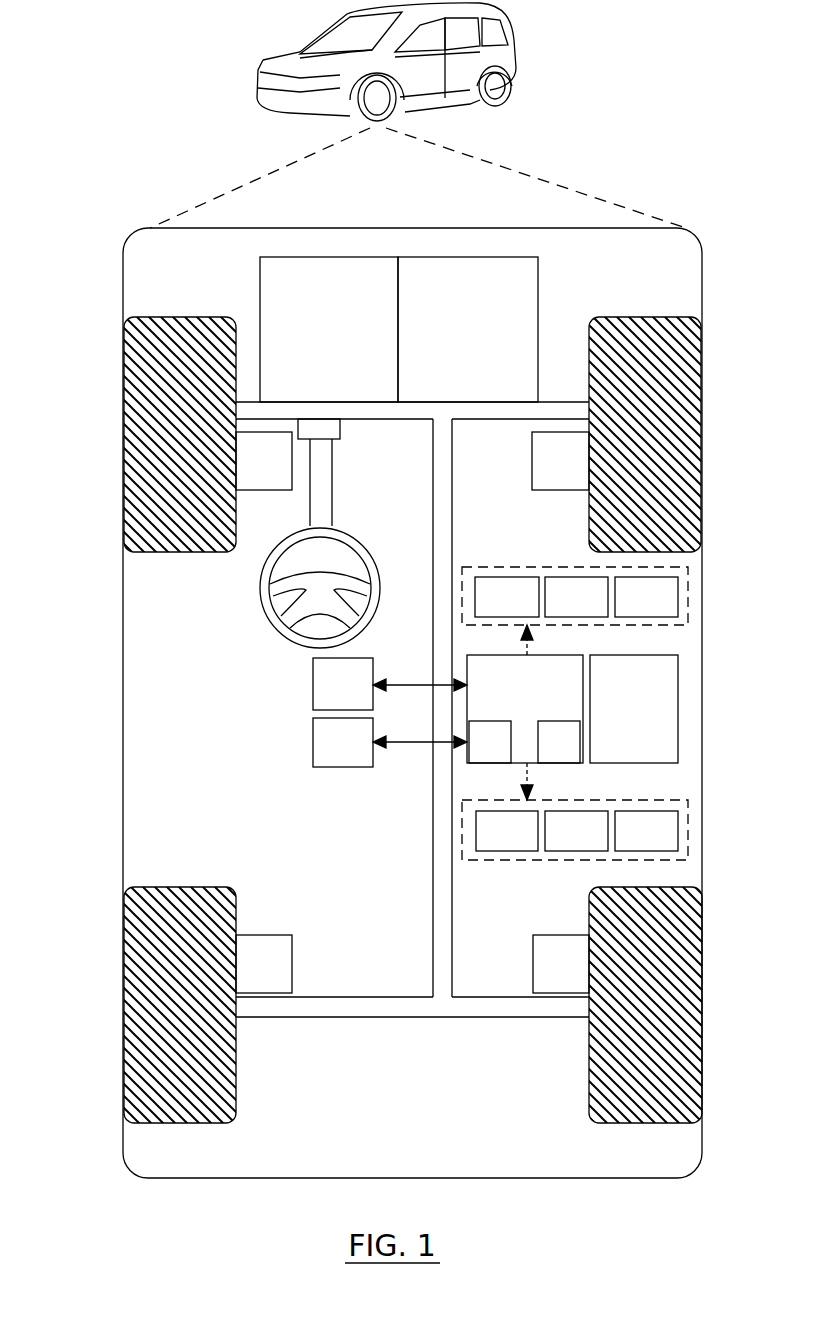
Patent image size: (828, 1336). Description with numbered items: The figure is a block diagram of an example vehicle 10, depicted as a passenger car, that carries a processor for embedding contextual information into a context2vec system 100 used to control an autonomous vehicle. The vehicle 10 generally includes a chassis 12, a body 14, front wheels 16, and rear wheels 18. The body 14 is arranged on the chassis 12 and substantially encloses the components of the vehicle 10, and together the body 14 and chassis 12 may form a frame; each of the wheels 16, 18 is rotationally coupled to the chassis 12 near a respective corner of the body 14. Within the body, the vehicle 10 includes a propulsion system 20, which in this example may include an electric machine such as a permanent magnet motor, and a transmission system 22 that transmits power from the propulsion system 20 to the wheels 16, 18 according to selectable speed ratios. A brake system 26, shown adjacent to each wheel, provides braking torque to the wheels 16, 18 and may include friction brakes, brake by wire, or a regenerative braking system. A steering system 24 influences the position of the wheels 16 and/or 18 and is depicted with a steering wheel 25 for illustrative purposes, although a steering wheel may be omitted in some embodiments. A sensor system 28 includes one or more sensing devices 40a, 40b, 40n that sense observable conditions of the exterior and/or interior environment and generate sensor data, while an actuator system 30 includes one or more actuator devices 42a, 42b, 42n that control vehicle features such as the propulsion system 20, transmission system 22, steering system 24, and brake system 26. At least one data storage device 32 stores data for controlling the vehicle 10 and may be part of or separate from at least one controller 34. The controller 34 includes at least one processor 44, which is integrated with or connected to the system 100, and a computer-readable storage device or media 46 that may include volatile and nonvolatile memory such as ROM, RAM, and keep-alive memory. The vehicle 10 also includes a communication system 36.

The vehicle 10 is at (263, 70).
The chassis 12 is at (432, 920).
The body 14 is at (123, 695).
The front wheels 16 is at (167, 421).
The rear wheels 18 is at (167, 1002).
The propulsion system 20 is at (314, 342).
The transmission system 22 is at (451, 342).
The steering system 24 is at (268, 653).
The steering wheel 25 is at (350, 530).
The brake system 26 is at (250, 475).
The sensor system 28 is at (517, 567).
The actuator system 30 is at (515, 862).
The data storage device 32 is at (328, 698).
The controller 34 is at (510, 698).
The communication system 36 is at (619, 723).
The sensing device 40a is at (486, 610).
The sensing device 40b is at (555, 610).
The sensing device 40n is at (625, 610).
The actuator device 42a is at (486, 844).
The actuator device 42b is at (555, 844).
The actuator device 42n is at (625, 844).
The processor 44 is at (475, 757).
The computer-readable storage device or media 46 is at (544, 757).
The context2vec system 100 is at (321, 755).